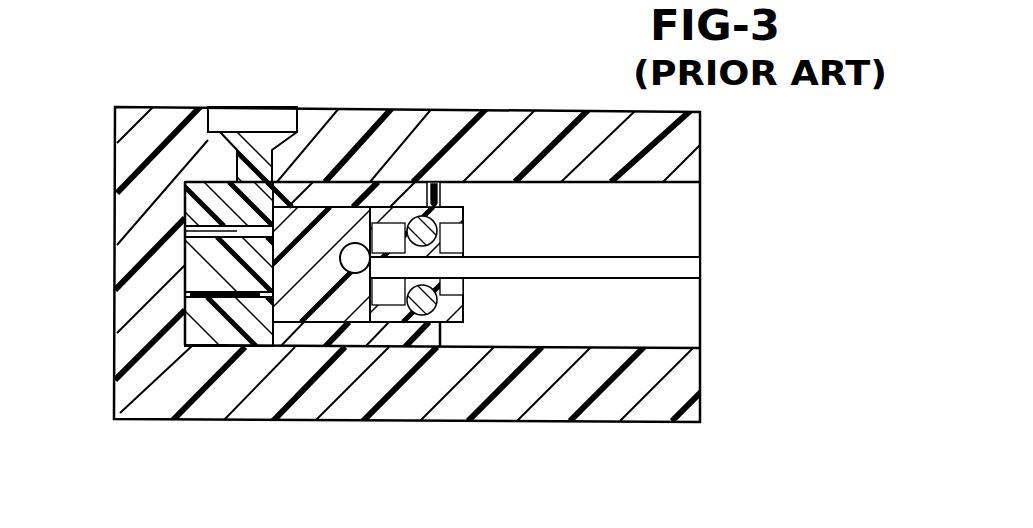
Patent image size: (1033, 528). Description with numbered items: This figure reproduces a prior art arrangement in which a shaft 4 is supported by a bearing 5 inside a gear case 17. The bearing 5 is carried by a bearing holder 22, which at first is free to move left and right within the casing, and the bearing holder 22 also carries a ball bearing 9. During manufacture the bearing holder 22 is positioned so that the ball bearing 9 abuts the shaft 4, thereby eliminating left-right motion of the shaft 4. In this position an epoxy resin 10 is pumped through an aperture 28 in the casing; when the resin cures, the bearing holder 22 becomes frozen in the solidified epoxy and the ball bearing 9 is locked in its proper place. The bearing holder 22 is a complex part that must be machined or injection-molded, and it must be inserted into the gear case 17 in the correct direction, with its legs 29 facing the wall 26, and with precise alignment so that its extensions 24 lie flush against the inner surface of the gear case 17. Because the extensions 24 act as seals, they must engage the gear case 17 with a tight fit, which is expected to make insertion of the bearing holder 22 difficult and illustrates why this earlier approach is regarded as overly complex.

The gear case 17 is at (598, 127).
The aperture 28 is at (252, 107).
The wall 26 is at (185, 214).
The epoxy resin 10 is at (196, 262).
The legs 29 is at (212, 294).
The bearing holder 22 is at (320, 313).
The bearing 5 is at (428, 294).
The extensions 24 is at (435, 188).
The shaft 4 is at (572, 270).
The ball bearing 9 is at (353, 250).